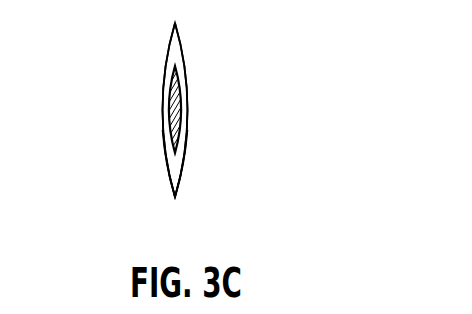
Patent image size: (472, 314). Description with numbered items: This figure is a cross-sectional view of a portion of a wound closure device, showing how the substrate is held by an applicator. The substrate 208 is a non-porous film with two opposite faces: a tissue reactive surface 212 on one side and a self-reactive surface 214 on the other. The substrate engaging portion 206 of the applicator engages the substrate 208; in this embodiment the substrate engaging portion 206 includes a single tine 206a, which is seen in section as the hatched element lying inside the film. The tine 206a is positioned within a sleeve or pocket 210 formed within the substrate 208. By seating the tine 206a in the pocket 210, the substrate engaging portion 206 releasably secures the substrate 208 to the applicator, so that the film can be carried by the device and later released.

The substrate engaging portion 206 is at (169, 132).
The tine 206a is at (182, 119).
The substrate 208 is at (186, 53).
The sleeve or pocket 210 is at (175, 160).
The tissue reactive surface 212 is at (163, 85).
The self-reactive surface 214 is at (188, 86).